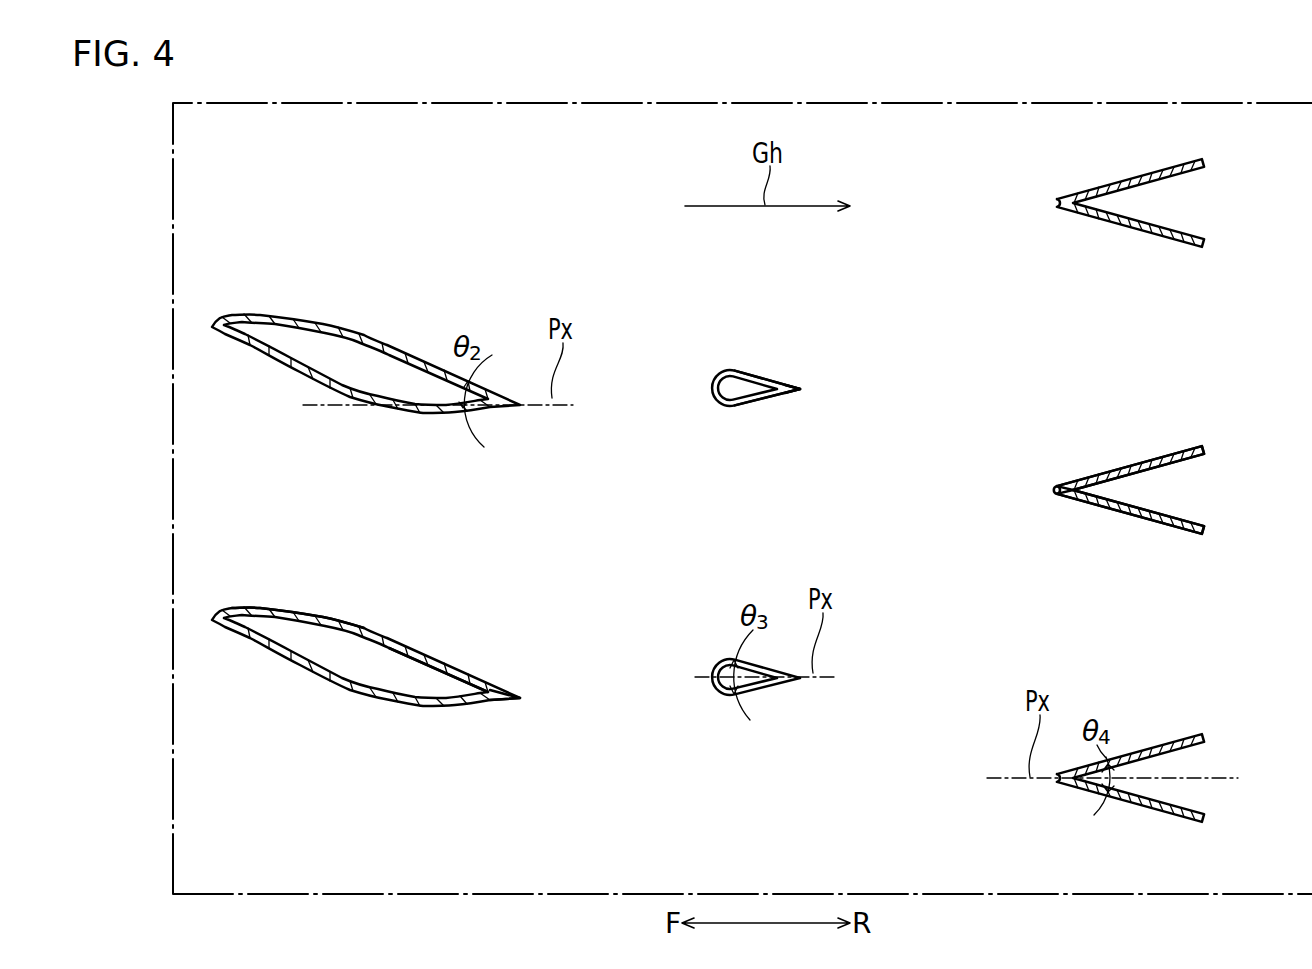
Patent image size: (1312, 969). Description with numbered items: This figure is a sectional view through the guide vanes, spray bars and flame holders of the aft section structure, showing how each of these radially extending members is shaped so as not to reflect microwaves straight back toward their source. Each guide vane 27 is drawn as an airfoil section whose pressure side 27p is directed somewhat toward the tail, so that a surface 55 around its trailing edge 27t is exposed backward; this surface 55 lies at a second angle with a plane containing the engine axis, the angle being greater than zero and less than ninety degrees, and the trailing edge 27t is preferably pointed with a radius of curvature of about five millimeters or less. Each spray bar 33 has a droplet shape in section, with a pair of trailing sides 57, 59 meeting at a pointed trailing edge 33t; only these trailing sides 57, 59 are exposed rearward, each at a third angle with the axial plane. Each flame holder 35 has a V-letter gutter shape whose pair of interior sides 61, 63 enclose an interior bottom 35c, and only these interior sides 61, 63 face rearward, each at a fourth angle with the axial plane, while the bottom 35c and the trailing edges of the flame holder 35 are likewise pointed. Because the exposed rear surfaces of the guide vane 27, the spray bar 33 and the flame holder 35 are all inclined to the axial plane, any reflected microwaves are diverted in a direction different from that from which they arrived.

The guide vane 27 is at (329, 717).
The pressure side 27p is at (315, 610).
The trailing edge 27t is at (523, 698).
The surface 55 is at (427, 650).
The spray bar 33 is at (710, 430).
The trailing edge 33t is at (805, 385).
The trailing side 57 is at (760, 372).
The trailing side 59 is at (778, 400).
The flame holder 35 is at (1040, 514).
The interior bottom 35c is at (1098, 495).
The interior side 61 is at (1180, 465).
The interior side 63 is at (1180, 512).